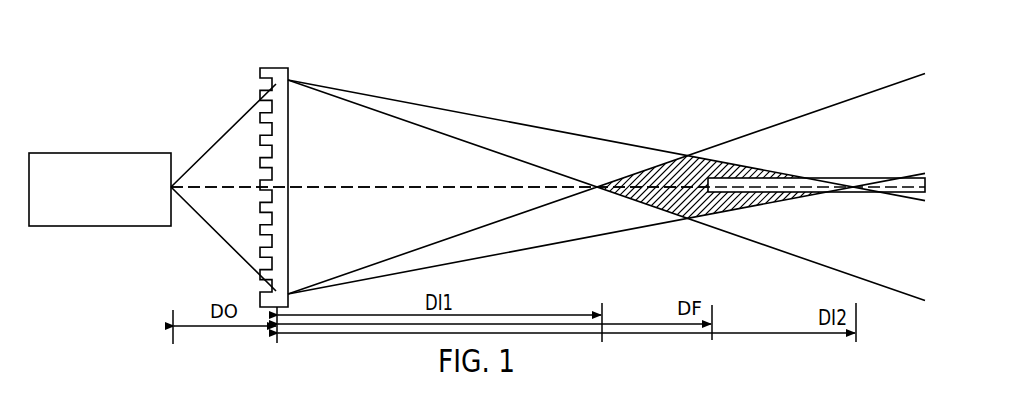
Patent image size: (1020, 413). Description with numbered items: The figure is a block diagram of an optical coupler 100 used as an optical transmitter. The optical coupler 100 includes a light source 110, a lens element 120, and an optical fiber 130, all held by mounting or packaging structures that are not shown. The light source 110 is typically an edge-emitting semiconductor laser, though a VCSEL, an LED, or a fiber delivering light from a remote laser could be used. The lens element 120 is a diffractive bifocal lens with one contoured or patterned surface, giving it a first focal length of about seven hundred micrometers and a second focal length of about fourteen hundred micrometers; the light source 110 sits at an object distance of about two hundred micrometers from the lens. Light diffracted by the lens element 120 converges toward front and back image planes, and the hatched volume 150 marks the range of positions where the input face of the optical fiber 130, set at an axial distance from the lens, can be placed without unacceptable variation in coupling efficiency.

The optical coupler 100 is at (134, 40).
The light source 110 is at (117, 214).
The lens element 120 is at (278, 68).
The optical fiber 130 is at (853, 176).
The volume 150 is at (683, 156).